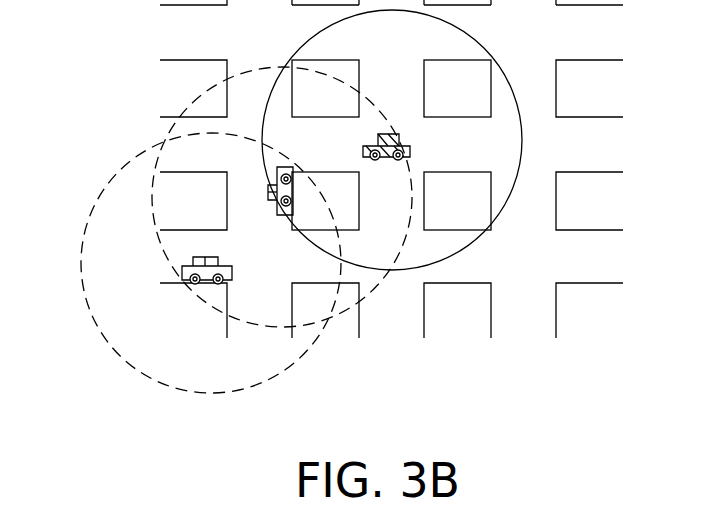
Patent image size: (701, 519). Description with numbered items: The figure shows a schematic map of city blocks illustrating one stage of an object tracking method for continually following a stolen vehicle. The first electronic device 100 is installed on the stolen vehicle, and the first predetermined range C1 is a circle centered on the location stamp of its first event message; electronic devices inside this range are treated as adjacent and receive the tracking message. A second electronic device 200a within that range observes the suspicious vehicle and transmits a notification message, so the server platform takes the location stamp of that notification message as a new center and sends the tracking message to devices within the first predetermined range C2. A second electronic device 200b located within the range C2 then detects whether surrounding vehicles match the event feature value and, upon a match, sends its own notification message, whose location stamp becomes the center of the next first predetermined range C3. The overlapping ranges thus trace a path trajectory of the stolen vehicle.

The first electronic device 100 is at (392, 130).
The second electronic device 200a is at (285, 165).
The second electronic device 200b is at (226, 266).
The first predetermined range C1 is at (473, 40).
The first predetermined range C2 is at (253, 68).
The first predetermined range C3 is at (130, 161).